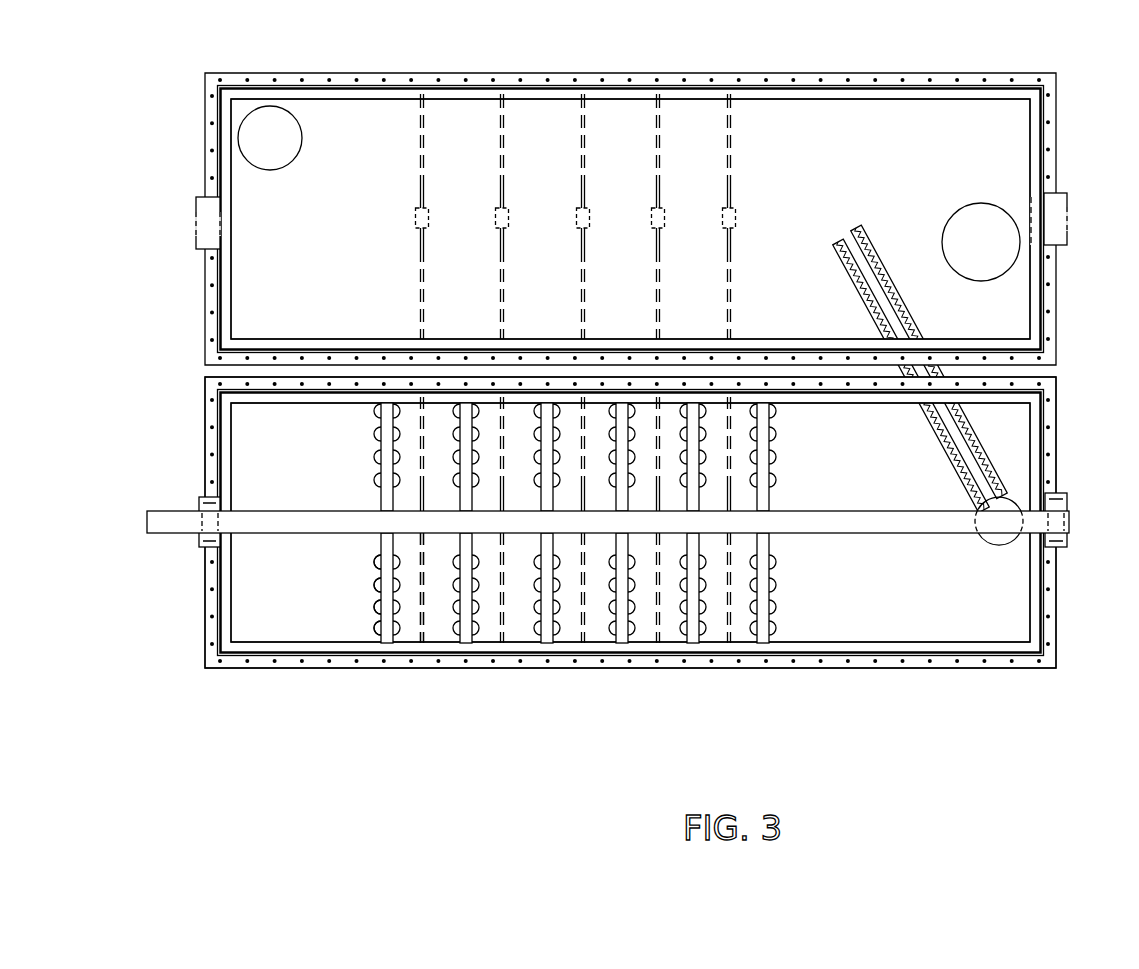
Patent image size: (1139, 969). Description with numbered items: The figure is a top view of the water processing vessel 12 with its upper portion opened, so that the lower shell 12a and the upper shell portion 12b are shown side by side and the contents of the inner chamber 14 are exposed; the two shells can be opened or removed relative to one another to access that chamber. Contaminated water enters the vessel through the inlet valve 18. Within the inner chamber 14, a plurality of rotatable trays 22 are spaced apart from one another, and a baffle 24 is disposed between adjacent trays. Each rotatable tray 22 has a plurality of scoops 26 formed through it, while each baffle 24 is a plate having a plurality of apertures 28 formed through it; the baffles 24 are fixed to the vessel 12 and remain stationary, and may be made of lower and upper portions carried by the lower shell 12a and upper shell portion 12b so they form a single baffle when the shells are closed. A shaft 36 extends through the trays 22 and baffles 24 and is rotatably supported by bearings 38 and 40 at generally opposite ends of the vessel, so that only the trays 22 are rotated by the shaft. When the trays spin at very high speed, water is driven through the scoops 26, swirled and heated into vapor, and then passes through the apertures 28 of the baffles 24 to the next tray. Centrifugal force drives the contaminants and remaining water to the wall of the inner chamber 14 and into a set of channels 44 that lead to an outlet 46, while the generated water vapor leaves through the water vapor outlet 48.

The water processing vessel 12 is at (634, 397).
The lower shell 12a is at (343, 663).
The upper shell portion 12b is at (631, 199).
The inner chamber 14 is at (597, 536).
The inlet valve 18 is at (263, 139).
The rotatable trays 22 is at (575, 584).
The baffle 24 is at (742, 138).
The scoops 26 is at (293, 639).
The apertures 28 is at (457, 629).
The shaft 36 is at (608, 571).
The bearing 38 is at (184, 497).
The bearing 40 is at (1086, 520).
The channels 44 is at (920, 277).
The outlet 46 is at (987, 611).
The water vapor outlet 48 is at (1024, 195).